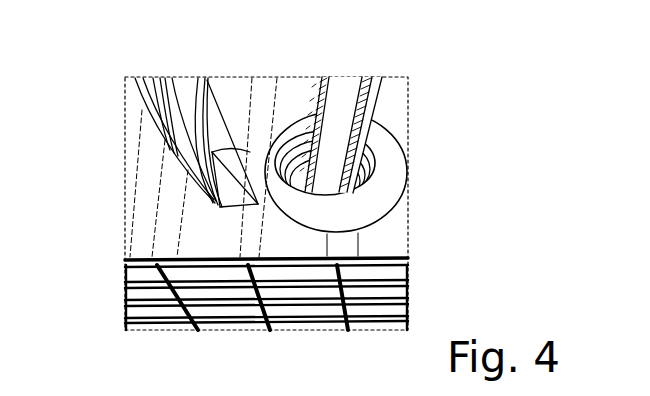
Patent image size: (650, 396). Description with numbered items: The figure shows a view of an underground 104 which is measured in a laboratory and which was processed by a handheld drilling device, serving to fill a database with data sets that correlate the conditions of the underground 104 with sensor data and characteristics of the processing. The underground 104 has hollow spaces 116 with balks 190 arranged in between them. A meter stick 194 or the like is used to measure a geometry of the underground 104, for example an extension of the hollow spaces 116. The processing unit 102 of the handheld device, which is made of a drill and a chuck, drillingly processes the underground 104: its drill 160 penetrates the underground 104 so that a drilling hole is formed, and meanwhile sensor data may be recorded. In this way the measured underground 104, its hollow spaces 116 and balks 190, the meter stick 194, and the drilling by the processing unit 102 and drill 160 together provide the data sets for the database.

The processing unit 102 is at (186, 74).
The drill 160 is at (228, 113).
The meter stick 194 is at (342, 98).
The underground 104 is at (404, 164).
The balks 190 is at (303, 305).
The hollow spaces 116 is at (187, 294).